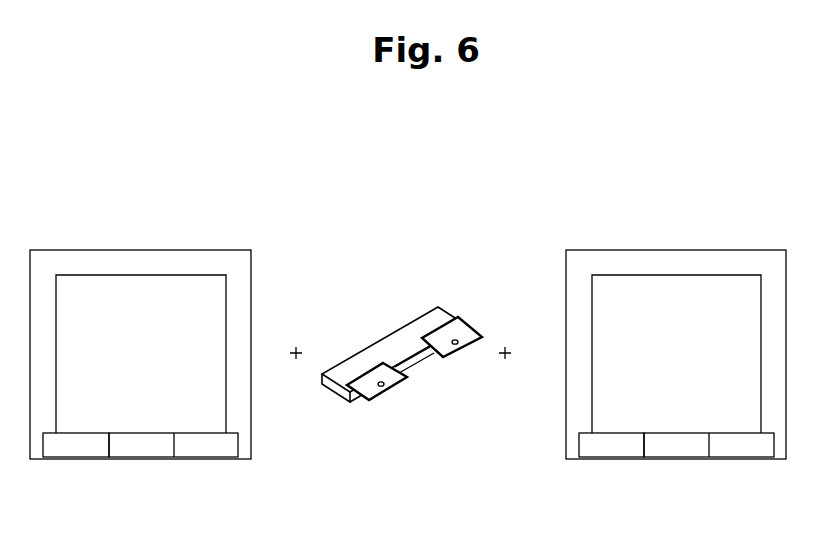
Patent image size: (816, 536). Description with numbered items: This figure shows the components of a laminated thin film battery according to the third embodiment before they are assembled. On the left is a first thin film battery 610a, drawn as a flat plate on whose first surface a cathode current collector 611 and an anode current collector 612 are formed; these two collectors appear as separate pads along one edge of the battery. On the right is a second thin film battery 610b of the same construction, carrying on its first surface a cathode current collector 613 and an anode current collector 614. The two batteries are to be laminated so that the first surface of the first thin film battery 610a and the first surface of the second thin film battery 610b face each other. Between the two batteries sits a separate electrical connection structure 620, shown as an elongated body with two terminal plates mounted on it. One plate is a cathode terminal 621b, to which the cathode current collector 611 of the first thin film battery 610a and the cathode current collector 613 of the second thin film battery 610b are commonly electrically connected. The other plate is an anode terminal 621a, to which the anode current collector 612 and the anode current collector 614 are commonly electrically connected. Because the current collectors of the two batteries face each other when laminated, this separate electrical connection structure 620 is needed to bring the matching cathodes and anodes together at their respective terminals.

The first thin film battery 610a is at (143, 241).
The second thin film battery 610b is at (638, 241).
The cathode current collector 611 is at (75, 458).
The anode current collector 612 is at (178, 458).
The cathode current collector 613 is at (613, 458).
The anode current collector 614 is at (717, 458).
The electrical connection structure 620 is at (401, 347).
The anode terminal 621a is at (370, 390).
The cathode terminal 621b is at (450, 348).